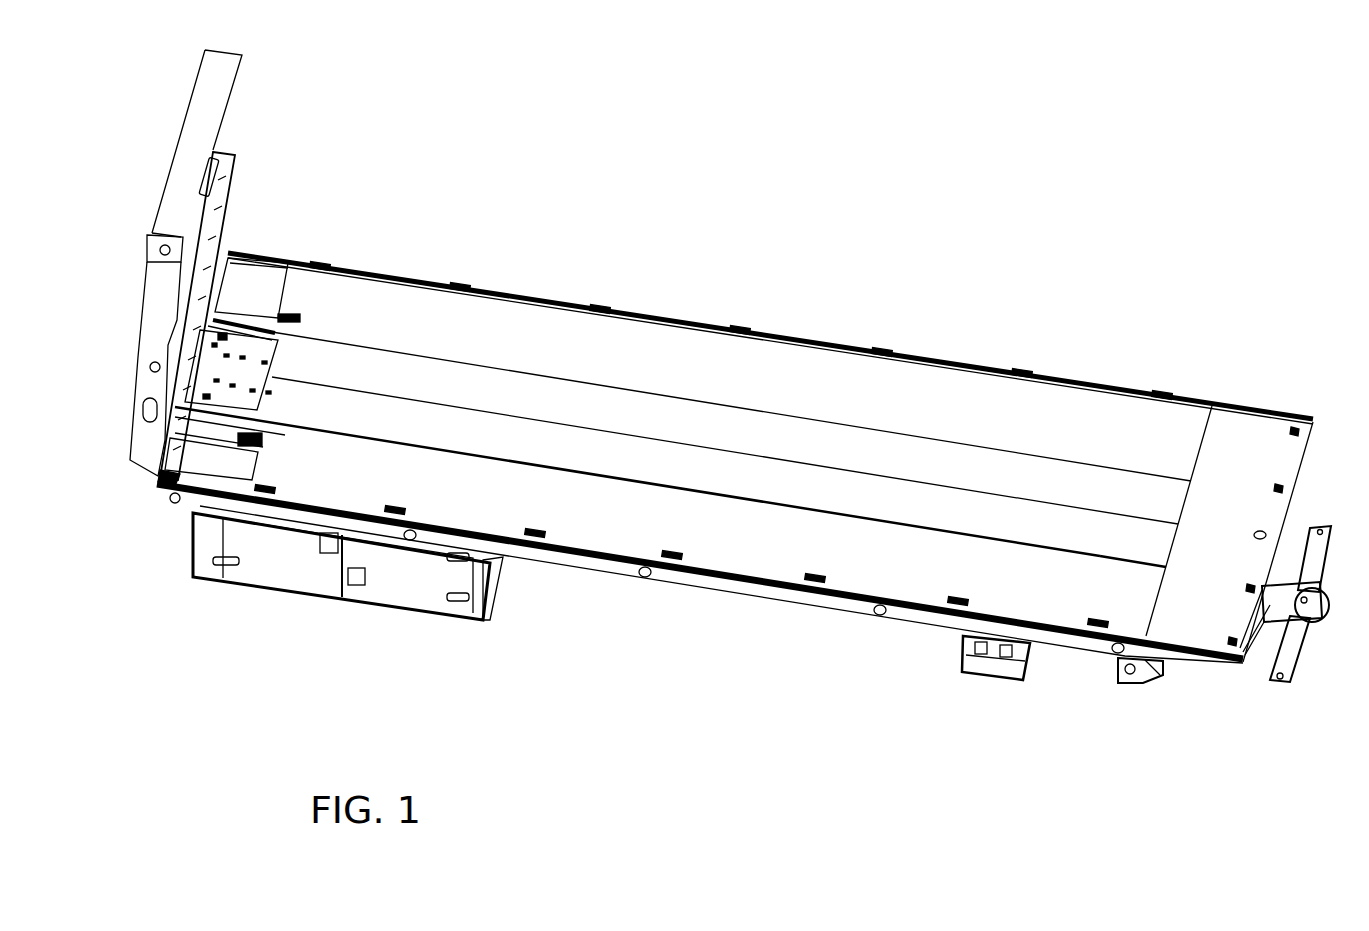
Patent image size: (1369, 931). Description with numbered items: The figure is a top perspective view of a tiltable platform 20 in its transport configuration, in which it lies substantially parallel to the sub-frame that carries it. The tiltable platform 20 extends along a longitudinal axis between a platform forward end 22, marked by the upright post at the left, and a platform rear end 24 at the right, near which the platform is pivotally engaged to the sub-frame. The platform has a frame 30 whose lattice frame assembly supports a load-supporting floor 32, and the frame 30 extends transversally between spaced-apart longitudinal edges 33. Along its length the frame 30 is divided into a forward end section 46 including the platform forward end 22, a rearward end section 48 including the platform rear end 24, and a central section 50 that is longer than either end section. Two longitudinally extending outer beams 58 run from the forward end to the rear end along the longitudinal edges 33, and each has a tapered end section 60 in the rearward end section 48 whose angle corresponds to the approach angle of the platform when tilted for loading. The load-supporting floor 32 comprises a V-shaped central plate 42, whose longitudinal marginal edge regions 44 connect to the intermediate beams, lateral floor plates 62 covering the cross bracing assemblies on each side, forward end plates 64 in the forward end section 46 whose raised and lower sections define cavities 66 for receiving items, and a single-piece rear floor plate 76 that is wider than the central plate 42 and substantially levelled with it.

The tiltable platform 20 is at (889, 240).
The platform forward end 22 is at (266, 166).
The platform rear end 24 is at (1315, 392).
The frame 30 is at (768, 598).
The load-supporting floor 32 is at (972, 430).
The longitudinal edges 33 is at (790, 311).
The central plate 42 is at (517, 400).
The longitudinal marginal edge regions 44 is at (1152, 478).
The forward end section 46 is at (270, 243).
The rearward end section 48 is at (1263, 393).
The central section 50 is at (723, 305).
The longitudinally extending outer beams 58 is at (158, 475).
The tapered end section 60 is at (1185, 652).
The lateral floor plate 62 is at (898, 378).
The forward end plates 64 is at (262, 289).
The cavities 66 is at (238, 276).
The rear floor plate 76 is at (1263, 458).